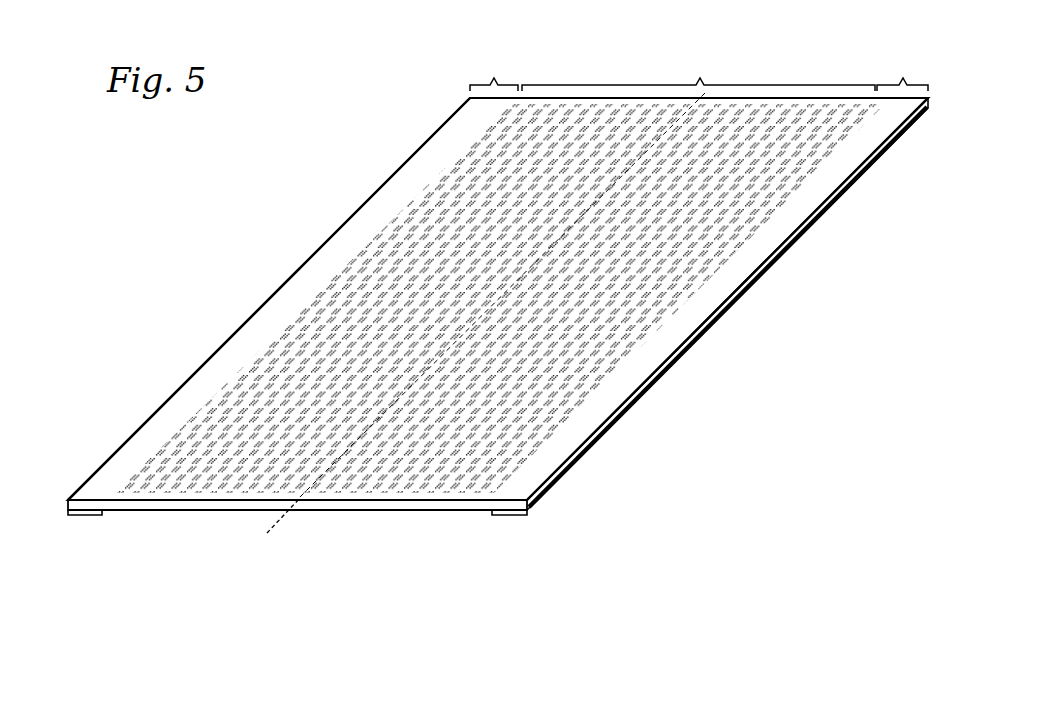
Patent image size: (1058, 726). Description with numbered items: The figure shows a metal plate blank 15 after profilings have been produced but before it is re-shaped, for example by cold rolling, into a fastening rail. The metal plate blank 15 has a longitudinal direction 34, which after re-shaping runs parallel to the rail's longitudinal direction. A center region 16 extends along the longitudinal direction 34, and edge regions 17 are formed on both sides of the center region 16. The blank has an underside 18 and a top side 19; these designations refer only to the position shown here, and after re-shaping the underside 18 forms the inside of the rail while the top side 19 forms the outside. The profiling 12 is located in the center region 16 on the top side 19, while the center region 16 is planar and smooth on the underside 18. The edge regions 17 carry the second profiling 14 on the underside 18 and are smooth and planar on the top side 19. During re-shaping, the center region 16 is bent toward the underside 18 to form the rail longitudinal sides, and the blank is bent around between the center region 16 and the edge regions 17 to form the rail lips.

The profiling 12 is at (428, 213).
The second profiling 14 is at (701, 348).
The metal plate blank 15 is at (302, 243).
The center region 16 is at (708, 95).
The edge regions 17 is at (699, 70).
The underside 18 is at (435, 512).
The top side 19 is at (148, 442).
The longitudinal direction 34 is at (277, 525).